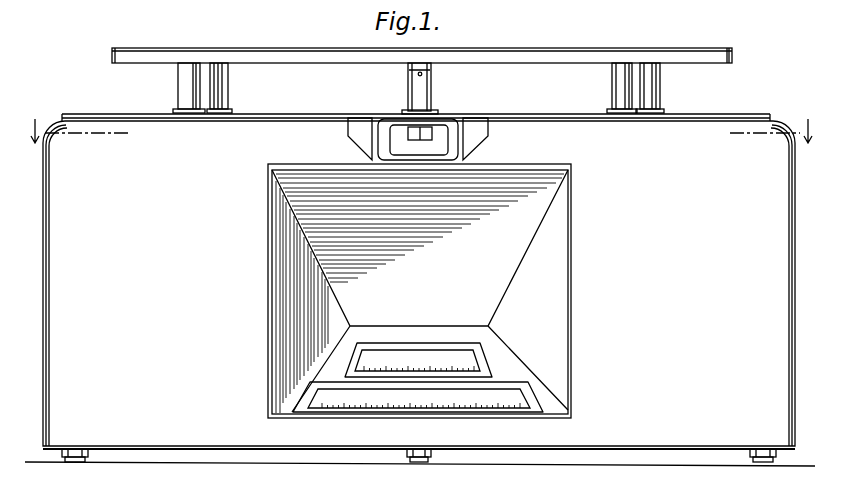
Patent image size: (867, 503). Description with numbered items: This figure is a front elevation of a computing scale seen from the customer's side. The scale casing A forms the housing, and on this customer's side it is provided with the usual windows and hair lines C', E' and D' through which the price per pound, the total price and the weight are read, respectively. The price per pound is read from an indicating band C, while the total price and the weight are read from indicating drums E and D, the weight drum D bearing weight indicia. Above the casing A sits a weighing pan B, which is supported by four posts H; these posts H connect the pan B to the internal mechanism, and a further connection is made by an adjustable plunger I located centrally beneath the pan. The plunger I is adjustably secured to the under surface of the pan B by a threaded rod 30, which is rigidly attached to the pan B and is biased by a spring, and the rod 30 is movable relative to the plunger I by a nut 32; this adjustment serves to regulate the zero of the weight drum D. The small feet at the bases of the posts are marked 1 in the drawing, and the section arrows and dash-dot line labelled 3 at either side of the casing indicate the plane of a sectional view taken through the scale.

The weighing pan B is at (660, 63).
The posts H is at (217, 85).
The post base 1 is at (200, 109).
The adjustable plunger I is at (431, 97).
The threaded rod 30 is at (432, 66).
The nut 32 is at (409, 75).
The scale casing A is at (716, 128).
The section line 3- 3 is at (420, 143).
The indicating band C is at (405, 140).
The price per pound window and hair line C' is at (460, 139).
The total price indicating drum E is at (418, 336).
The total price window and hair line E' is at (439, 344).
The weight drum D is at (418, 413).
The weight window and hair line D' is at (430, 373).